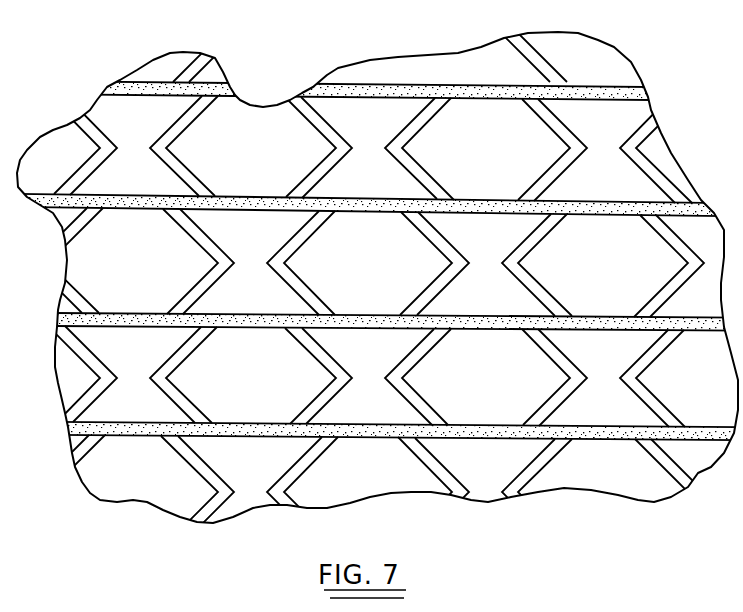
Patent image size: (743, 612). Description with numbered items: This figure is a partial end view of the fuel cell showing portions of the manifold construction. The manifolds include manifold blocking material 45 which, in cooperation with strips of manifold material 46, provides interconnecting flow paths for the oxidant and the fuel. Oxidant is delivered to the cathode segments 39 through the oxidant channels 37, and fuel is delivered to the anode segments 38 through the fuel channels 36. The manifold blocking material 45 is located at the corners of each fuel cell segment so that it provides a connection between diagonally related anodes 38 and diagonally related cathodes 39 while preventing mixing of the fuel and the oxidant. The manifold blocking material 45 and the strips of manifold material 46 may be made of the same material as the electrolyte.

The fuel channel 36 is at (571, 67).
The oxidant channel 37 is at (464, 158).
The anode segment 38 is at (546, 238).
The cathode segment 39 is at (191, 125).
The manifold blocking material 45 is at (121, 130).
The strip of manifold material 46 is at (336, 92).